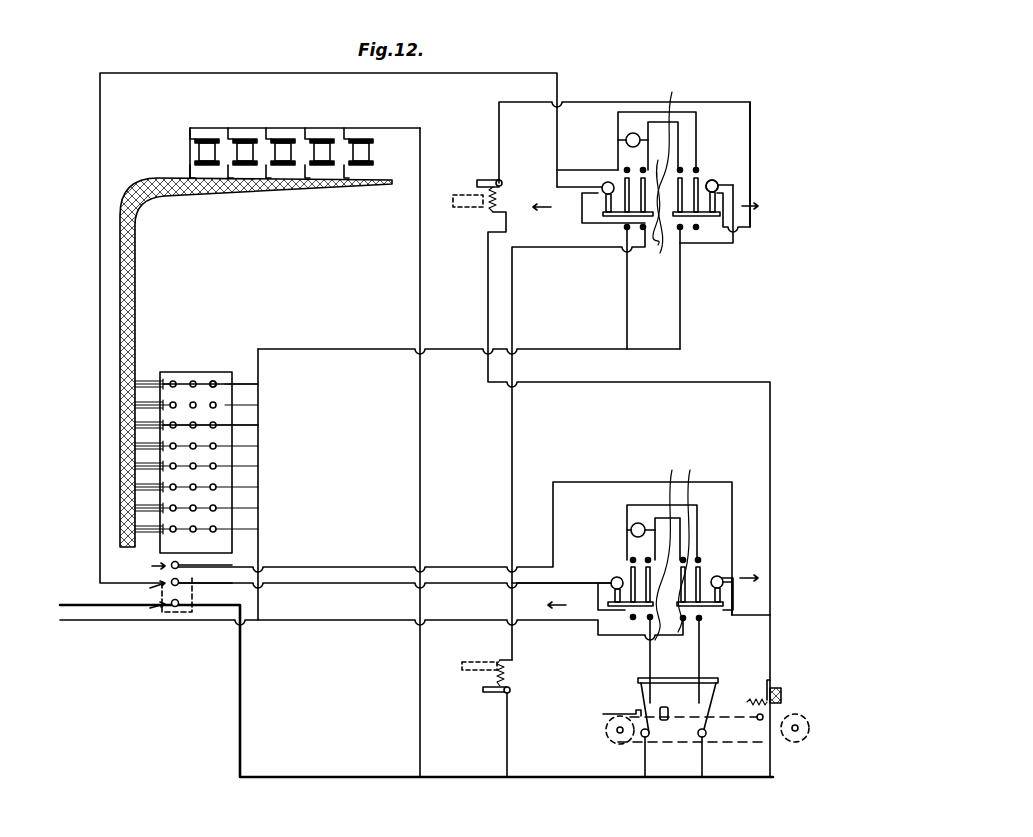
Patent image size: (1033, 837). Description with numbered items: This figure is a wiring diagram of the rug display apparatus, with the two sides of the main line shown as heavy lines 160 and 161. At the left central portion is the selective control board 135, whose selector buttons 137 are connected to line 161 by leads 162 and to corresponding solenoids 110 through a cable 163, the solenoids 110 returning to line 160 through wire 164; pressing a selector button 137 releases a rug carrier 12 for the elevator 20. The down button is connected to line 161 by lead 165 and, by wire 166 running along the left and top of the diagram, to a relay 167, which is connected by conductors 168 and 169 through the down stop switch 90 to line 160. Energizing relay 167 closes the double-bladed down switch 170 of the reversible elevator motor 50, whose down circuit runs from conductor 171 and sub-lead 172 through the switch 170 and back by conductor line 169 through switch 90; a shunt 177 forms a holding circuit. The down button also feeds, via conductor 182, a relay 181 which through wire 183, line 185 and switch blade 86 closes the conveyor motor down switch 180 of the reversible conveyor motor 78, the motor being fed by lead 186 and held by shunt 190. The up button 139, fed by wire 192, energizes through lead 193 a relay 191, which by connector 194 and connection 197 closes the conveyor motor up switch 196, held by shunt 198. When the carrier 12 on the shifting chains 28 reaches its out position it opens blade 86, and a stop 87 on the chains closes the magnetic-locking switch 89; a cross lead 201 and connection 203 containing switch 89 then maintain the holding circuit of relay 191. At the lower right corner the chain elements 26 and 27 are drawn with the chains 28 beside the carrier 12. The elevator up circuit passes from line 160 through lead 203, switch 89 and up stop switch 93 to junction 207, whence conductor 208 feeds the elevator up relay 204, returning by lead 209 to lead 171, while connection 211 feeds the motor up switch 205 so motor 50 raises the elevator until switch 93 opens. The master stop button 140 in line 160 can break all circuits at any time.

The solenoid 110 is at (214, 126).
The wire 166 is at (100, 267).
The cable 163 is at (136, 244).
The wire 164 is at (420, 434).
The selective control board 135 is at (192, 378).
The selector button 137 is at (216, 378).
The leads 162 is at (248, 427).
The main line side 161 is at (258, 459).
The conductor 171 is at (331, 349).
The lead 203 is at (484, 246).
The conductor line 169 is at (582, 248).
The sub-lead 172 is at (627, 290).
The up stop switch 93 is at (486, 180).
The elevator 20 is at (468, 202).
The down stop switch 90 is at (492, 694).
The shunt 177 is at (573, 170).
The conductor 168 is at (582, 214).
The relay 167 is at (607, 181).
The reversible elevator motor 50 is at (634, 133).
The down switch 170 is at (676, 162).
The motor up switch 205 is at (657, 248).
The elevator up relay 204 is at (718, 180).
The junction 207 is at (750, 186).
The conductor 208 is at (730, 184).
The connection 211 is at (750, 212).
The lead 209 is at (735, 239).
The lead 193 is at (383, 559).
The wire 192 is at (232, 565).
The lead 165 is at (232, 581).
The conductor 182 is at (362, 583).
The lead 186 is at (375, 620).
The main line side 160 is at (80, 594).
The up button 139 is at (176, 563).
The master stop button 140 is at (175, 608).
The reversible conveyor motor 78 is at (638, 523).
The conveyor motor down switch 180 is at (672, 550).
The conveyor motor up switch 196 is at (686, 558).
The shunt 190 is at (612, 557).
The shunt 198 is at (710, 557).
The relay 181 is at (611, 578).
The relay 191 is at (723, 577).
The wire 183 is at (616, 614).
The line 185 is at (642, 657).
The connection 197 is at (704, 657).
The cross lead 201 is at (752, 616).
The connector 194 is at (732, 602).
The double-throw switch blade 86 is at (640, 693).
The rug carrier 12 is at (663, 708).
The pulley 27 is at (622, 744).
The pulley shaft 26 is at (617, 731).
The carrier-shifting chains 28 is at (742, 743).
The stop 87 is at (754, 722).
The magnetic-locking spring-opening switch 89 is at (780, 690).